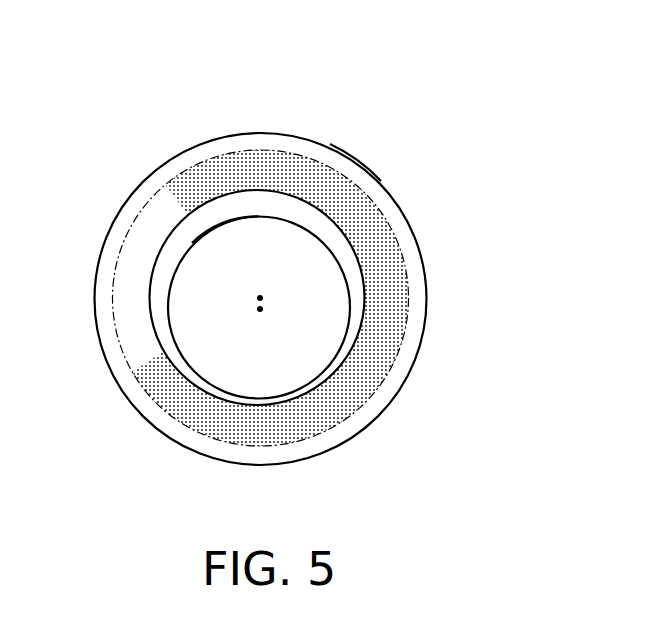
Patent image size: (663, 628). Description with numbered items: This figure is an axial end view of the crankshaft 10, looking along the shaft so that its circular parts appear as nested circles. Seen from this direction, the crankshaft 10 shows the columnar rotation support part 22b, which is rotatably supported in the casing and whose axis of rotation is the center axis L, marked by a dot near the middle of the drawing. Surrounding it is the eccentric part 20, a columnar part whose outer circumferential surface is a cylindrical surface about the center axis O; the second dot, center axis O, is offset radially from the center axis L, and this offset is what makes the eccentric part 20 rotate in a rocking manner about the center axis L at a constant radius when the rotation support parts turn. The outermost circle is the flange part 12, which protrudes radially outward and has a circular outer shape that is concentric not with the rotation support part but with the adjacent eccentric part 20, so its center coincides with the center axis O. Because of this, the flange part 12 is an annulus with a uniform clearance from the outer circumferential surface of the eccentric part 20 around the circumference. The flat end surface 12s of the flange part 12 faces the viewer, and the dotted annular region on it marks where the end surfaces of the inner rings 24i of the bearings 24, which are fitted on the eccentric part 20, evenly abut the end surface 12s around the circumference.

The crankshaft 10 is at (362, 135).
The flange part 12 is at (428, 303).
The end surface of the flange part 12s is at (366, 182).
The eccentric part 20 is at (248, 189).
The rotation support part 22b is at (192, 243).
The bearing 24 is at (270, 298).
The inner ring 24i is at (380, 213).
The center axis of the eccentric part O is at (264, 296).
The center axis of the rotation support parts L is at (263, 309).